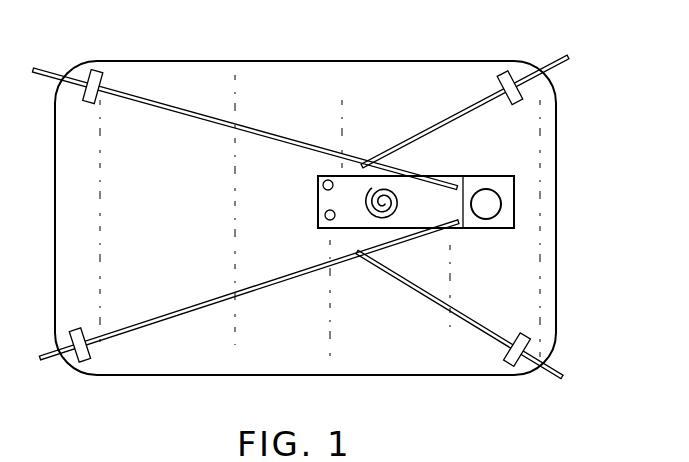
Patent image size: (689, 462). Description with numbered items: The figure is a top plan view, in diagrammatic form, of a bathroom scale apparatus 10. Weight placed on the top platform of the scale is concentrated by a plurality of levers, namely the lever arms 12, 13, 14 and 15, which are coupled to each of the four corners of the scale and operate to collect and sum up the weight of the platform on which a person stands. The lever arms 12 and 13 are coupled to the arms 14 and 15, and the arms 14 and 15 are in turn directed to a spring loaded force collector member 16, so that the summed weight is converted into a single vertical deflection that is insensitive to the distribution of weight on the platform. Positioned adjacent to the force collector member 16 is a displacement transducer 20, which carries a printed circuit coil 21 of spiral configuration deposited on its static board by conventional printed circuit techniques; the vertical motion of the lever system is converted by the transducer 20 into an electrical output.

The bathroom scale apparatus 10 is at (557, 203).
The lever arm 12 is at (451, 307).
The lever arm 13 is at (463, 108).
The arm 14 is at (200, 307).
The arm 15 is at (191, 108).
The spring loaded force collector member 16 is at (500, 182).
The displacement transducer 20 is at (347, 222).
The printed circuit coil 21 is at (371, 185).